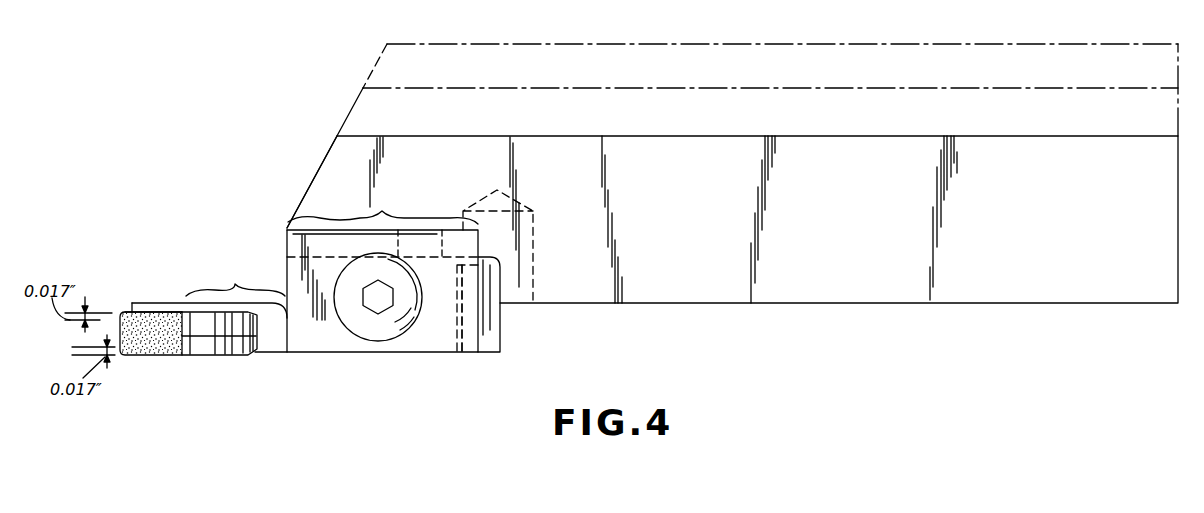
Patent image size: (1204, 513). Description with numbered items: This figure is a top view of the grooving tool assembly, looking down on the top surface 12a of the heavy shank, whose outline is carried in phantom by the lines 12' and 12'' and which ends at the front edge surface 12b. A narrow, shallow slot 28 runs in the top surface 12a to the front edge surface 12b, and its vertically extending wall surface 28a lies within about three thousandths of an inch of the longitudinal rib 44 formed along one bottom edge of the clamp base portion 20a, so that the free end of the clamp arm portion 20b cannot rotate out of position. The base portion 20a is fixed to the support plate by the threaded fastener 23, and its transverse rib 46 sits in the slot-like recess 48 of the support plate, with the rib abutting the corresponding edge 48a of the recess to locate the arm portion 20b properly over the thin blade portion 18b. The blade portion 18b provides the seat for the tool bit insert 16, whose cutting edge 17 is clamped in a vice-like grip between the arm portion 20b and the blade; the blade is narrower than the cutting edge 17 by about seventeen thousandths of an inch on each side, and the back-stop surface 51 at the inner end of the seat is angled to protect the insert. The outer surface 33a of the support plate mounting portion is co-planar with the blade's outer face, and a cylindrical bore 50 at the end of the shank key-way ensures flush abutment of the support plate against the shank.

The top surface 12a is at (1006, 244).
The bar upper profile line 12' is at (770, 46).
The bar top profile line 12'' is at (782, 23).
The front edge surface 12b is at (286, 229).
The tool bit insert 16 is at (152, 356).
The cutting edge 17 is at (133, 302).
The blade portion 18b is at (163, 310).
The base portion 20a is at (383, 205).
The arm portion 20b is at (209, 289).
The threaded fastener 23 is at (376, 330).
The slot 28 is at (424, 243).
The vertically extending wall surface 28a is at (333, 233).
The opposite surface 33a is at (413, 354).
The longitudinal rib 44 is at (297, 243).
The transverse rib 46 is at (470, 330).
The slot-like recess 48 is at (455, 260).
The edge of recess 48a is at (458, 297).
The cylindrical bore 50 is at (535, 266).
The back-stop surface 51 is at (283, 335).